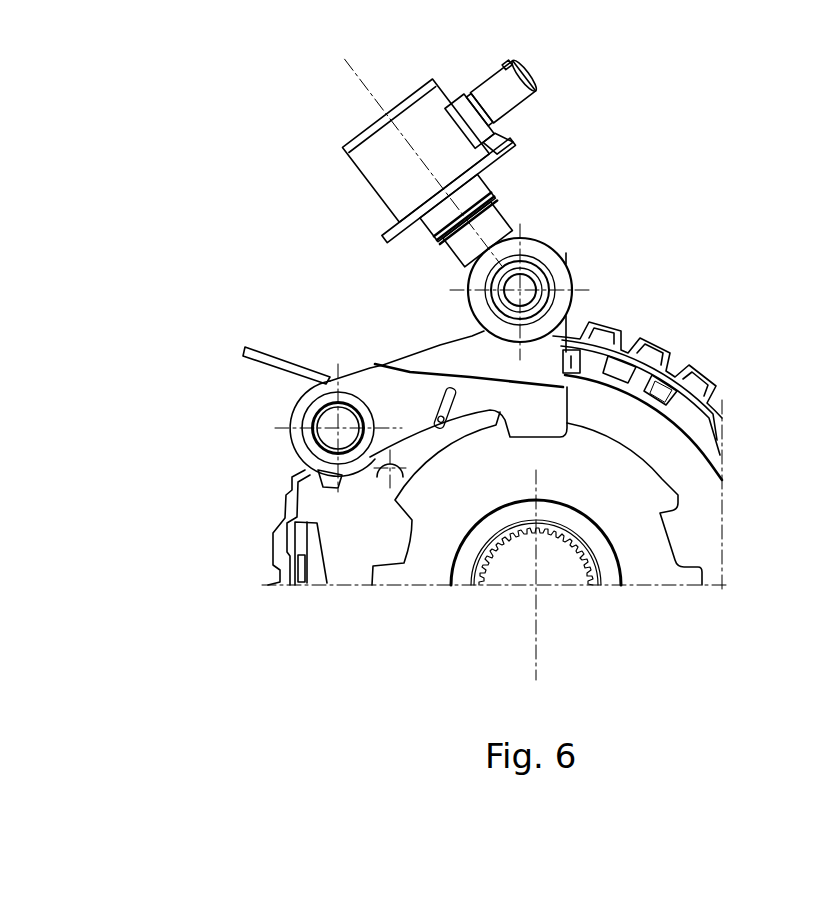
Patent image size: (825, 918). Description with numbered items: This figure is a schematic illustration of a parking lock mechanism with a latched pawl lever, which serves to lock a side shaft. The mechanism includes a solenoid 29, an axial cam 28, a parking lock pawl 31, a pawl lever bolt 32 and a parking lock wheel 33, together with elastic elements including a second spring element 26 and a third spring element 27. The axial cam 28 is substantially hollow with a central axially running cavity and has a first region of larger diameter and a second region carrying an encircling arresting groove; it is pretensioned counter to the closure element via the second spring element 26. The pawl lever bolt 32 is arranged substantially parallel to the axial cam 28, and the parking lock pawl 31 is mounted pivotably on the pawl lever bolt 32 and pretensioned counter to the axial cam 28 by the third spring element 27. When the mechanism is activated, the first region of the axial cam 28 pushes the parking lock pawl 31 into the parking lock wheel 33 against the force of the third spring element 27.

The second spring element 26 is at (555, 293).
The third spring element 27 is at (270, 355).
The axial cam 28 is at (540, 250).
The solenoid 29 is at (397, 182).
The parking lock pawl 31 is at (400, 407).
The pawl lever bolt 32 is at (325, 437).
The parking lock wheel 33 is at (627, 535).